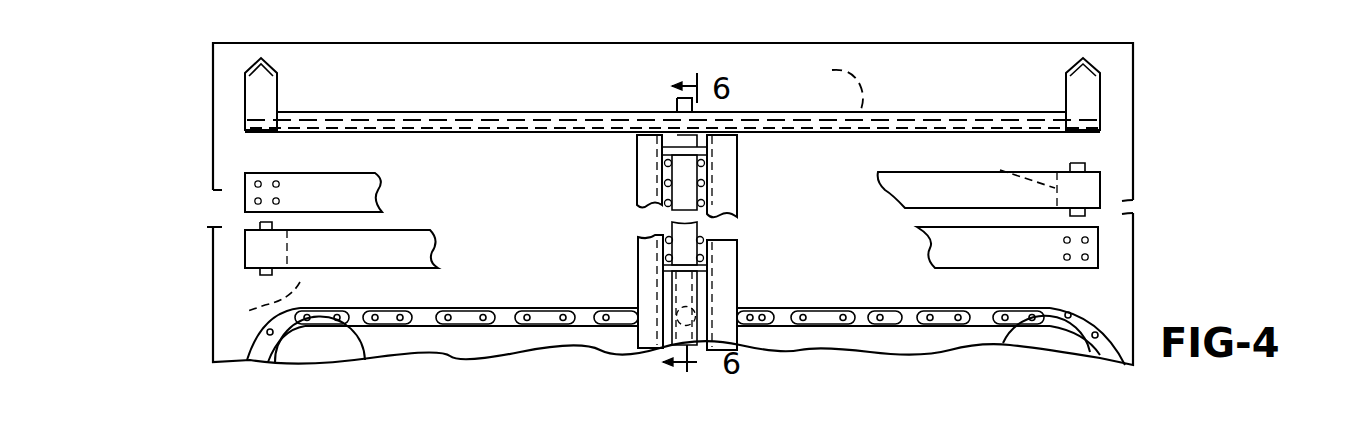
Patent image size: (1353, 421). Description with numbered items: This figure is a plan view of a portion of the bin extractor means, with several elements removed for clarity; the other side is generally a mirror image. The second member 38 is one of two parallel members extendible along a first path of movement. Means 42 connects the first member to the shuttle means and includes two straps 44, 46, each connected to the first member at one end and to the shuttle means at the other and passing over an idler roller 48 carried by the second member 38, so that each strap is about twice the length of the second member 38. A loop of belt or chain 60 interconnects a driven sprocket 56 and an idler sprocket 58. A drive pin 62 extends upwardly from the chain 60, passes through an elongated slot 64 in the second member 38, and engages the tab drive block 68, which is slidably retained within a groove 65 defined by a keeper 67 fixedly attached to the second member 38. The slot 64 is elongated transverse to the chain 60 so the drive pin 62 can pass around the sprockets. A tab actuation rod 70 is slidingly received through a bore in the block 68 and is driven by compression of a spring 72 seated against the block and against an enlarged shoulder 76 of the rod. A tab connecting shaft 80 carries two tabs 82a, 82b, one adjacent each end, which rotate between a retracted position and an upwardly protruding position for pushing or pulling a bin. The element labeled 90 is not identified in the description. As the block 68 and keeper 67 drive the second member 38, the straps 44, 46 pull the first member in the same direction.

The second member 38 is at (1118, 142).
The means for connecting the first member to the shuttle means 42 is at (925, 255).
The strap 44 is at (352, 173).
The strap 46 is at (362, 260).
The idler roller 48 is at (1000, 170).
The driven sprocket 56 is at (1090, 310).
The idler sprocket 58 is at (353, 344).
The chain 60 is at (553, 279).
The drive pin 62 is at (695, 307).
The elongated slot 64 is at (665, 343).
The groove 65 is at (636, 152).
The keeper 67 is at (665, 273).
The tab drive block 68 is at (663, 266).
The tab actuation rod 70 is at (653, 176).
The spring 72 is at (737, 184).
The enlarged shoulder 76 is at (737, 152).
The tab connecting shaft 80 is at (496, 80).
The tab 82a is at (280, 84).
The tab 82b is at (1066, 80).
The cable 90 is at (826, 87).